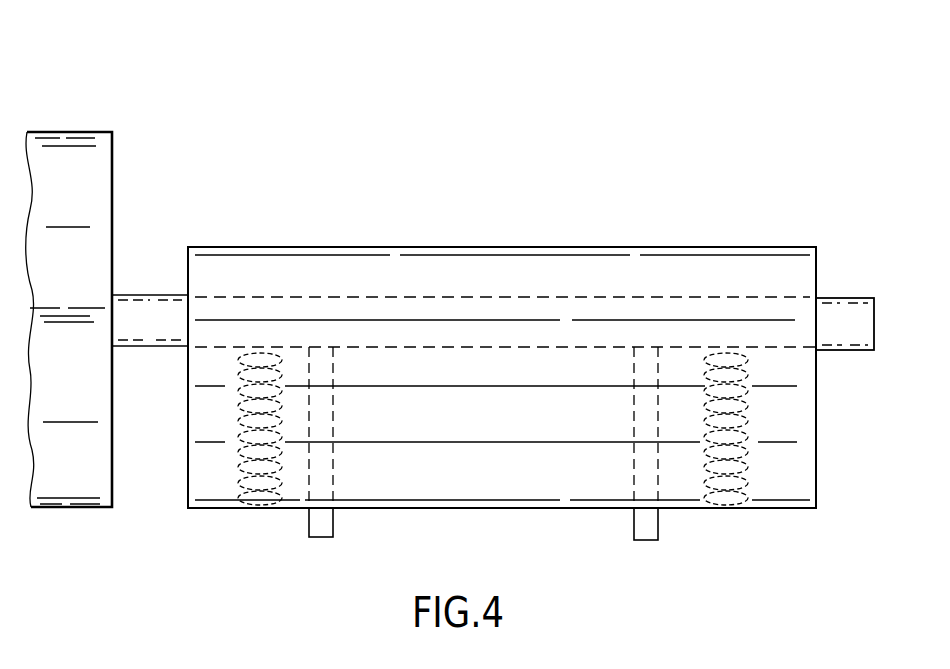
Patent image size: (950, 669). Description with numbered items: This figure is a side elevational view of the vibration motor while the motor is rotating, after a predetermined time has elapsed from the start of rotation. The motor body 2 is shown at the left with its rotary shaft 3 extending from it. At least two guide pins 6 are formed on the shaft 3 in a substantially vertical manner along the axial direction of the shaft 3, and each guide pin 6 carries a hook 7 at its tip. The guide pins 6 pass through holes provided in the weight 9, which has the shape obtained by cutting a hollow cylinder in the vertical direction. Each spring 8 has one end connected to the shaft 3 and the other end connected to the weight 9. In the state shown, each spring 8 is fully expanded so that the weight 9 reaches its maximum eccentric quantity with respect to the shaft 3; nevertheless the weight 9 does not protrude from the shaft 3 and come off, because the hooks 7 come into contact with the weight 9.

The motor body 2 is at (82, 131).
The rotary shaft 3 is at (862, 298).
The guide pin 6 is at (334, 427).
The hook 7 is at (308, 522).
The spring 8 is at (240, 412).
The weight 9 is at (547, 247).